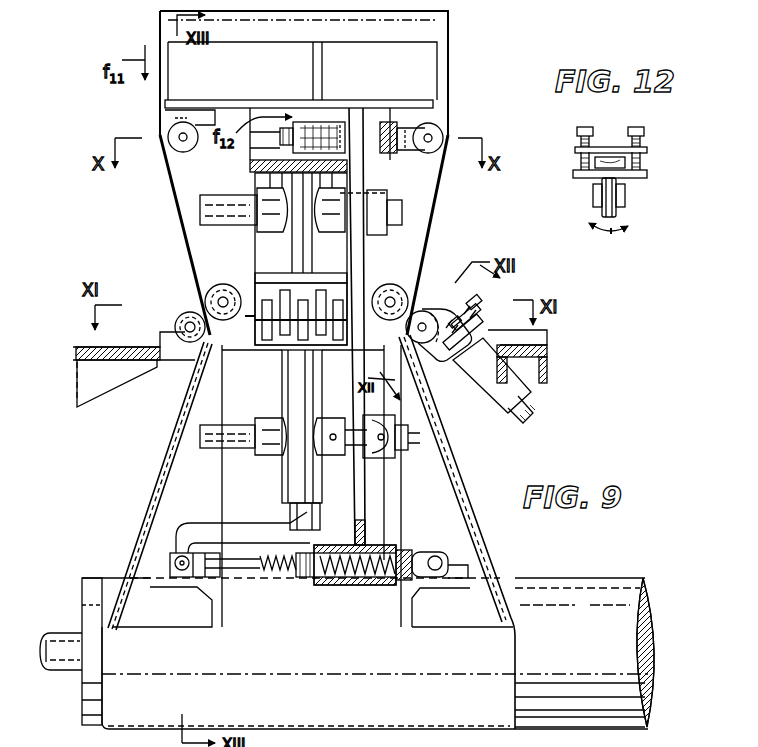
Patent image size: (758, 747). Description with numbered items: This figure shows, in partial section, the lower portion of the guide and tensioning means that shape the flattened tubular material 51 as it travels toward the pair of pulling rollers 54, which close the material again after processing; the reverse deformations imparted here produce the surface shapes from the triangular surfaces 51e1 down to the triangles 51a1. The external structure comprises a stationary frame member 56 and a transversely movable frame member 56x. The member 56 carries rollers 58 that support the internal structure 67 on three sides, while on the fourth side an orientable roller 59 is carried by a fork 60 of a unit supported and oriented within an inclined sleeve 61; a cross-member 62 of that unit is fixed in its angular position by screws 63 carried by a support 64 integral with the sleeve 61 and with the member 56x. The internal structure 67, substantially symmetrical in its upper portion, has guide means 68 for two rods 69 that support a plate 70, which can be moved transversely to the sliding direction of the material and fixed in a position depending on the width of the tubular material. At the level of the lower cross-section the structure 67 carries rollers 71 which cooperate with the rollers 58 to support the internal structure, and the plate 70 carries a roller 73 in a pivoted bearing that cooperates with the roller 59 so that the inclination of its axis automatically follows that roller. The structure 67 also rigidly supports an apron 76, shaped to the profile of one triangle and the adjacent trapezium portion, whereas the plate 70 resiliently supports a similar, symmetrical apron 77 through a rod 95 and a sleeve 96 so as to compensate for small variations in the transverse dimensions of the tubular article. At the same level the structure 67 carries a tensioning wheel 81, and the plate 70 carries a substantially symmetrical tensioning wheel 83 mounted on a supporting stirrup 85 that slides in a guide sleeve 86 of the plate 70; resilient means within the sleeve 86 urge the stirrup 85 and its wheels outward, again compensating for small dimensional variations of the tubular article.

In FIG. 9, the flattened tubular material 51 is at (518, 675).
In FIG. 9, the triangle surface shape 51a1 is at (168, 492).
In FIG. 9, the triangular surface shape 51e1 is at (180, 228).
In FIG. 9, the pulling rollers 54 is at (543, 578).
In FIG. 9, the stationary frame member 56 is at (82, 347).
In FIG. 9, the transversely movable frame member 56x is at (549, 359).
In FIG. 9, the rollers 58 is at (185, 313).
In FIG. 9, the orientable roller 59 is at (428, 345).
In FIG. 12, the orientable roller 59 is at (602, 196).
In FIG. 9, the fork 60 is at (448, 316).
In FIG. 12, the fork 60 is at (626, 203).
In FIG. 9, the inclined sleeve 61 is at (507, 398).
In FIG. 9, the cross-member 62 is at (478, 337).
In FIG. 12, the cross-member 62 is at (573, 173).
In FIG. 9, the screws 63 is at (480, 306).
In FIG. 12, the screws 63 is at (637, 127).
In FIG. 9, the support 64 is at (457, 312).
In FIG. 12, the support 64 is at (575, 151).
In FIG. 9, the internal structure 67 is at (255, 185).
In FIG. 9, the guide means 68 is at (268, 232).
In FIG. 9, the rods 69 is at (218, 226).
In FIG. 9, the plate 70 is at (364, 258).
In FIG. 9, the rollers 71 is at (215, 292).
In FIG. 9, the roller 73 is at (392, 286).
In FIG. 9, the apron 76 is at (178, 452).
In FIG. 9, the apron 77 is at (462, 480).
In FIG. 9, the tensioning wheel 81 is at (168, 125).
In FIG. 9, the tensioning wheel 83 is at (438, 128).
In FIG. 9, the supporting stirrup 85 is at (388, 122).
In FIG. 9, the guide sleeve 86 is at (316, 122).
In FIG. 9, the rod 95 is at (302, 580).
In FIG. 9, the sleeve 96 is at (388, 585).